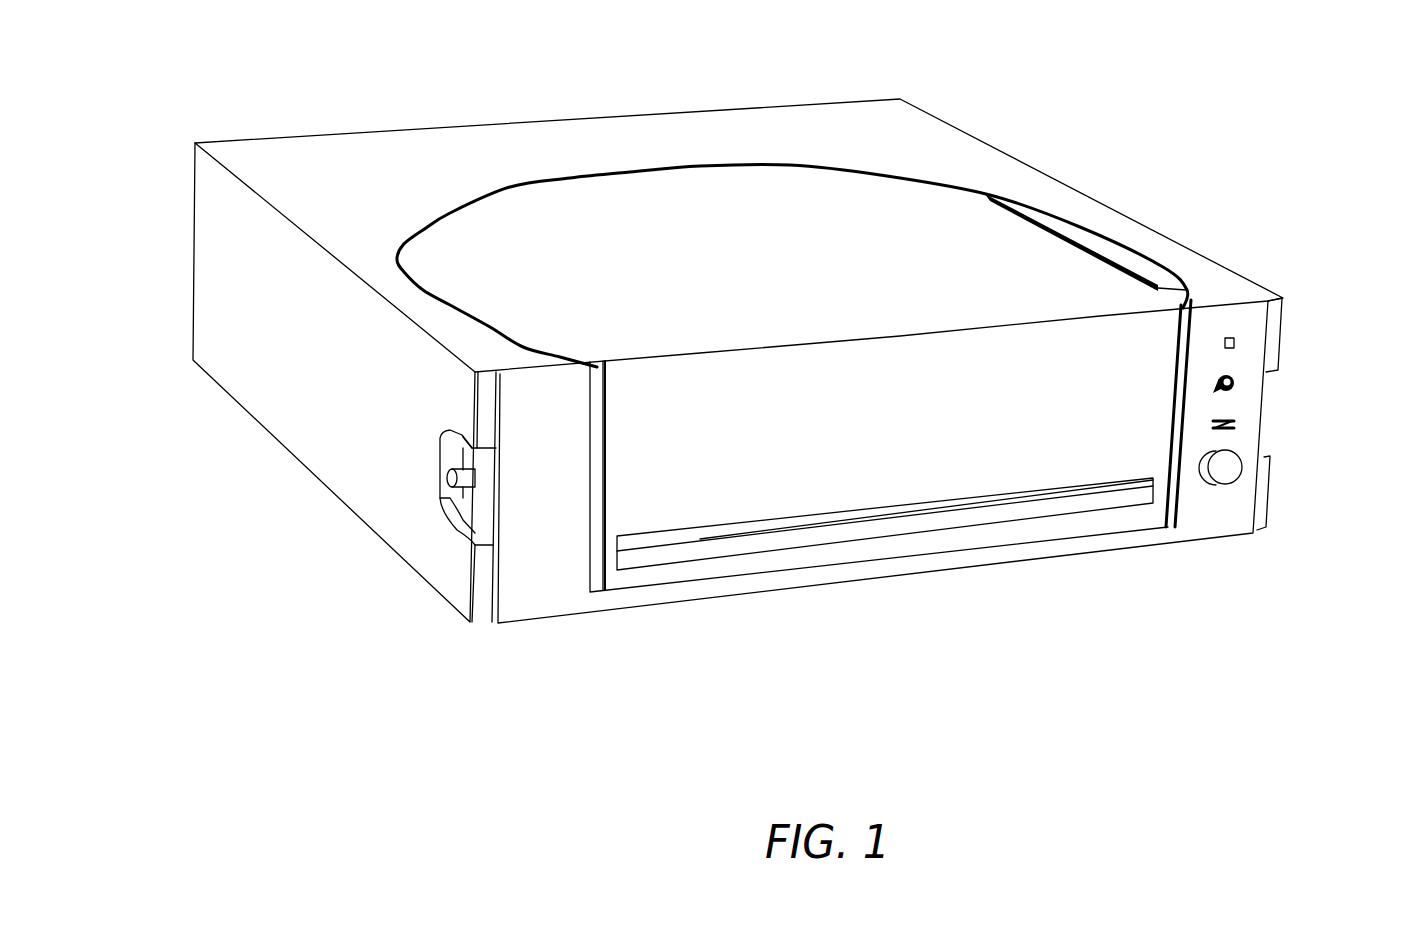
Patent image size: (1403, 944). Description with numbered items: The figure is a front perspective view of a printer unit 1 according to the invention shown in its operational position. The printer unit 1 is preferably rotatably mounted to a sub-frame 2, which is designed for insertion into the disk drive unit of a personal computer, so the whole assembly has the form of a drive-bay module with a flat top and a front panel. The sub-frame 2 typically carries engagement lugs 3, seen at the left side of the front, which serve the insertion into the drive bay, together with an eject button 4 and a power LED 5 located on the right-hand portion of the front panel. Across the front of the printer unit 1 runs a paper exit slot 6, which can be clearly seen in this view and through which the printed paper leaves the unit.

The printer unit 1 is at (932, 222).
The sub-frame 2 is at (366, 153).
The engagement lugs 3 is at (476, 482).
The eject button 4 is at (1228, 478).
The power LED 5 is at (1236, 343).
The paper exit slot 6 is at (860, 525).